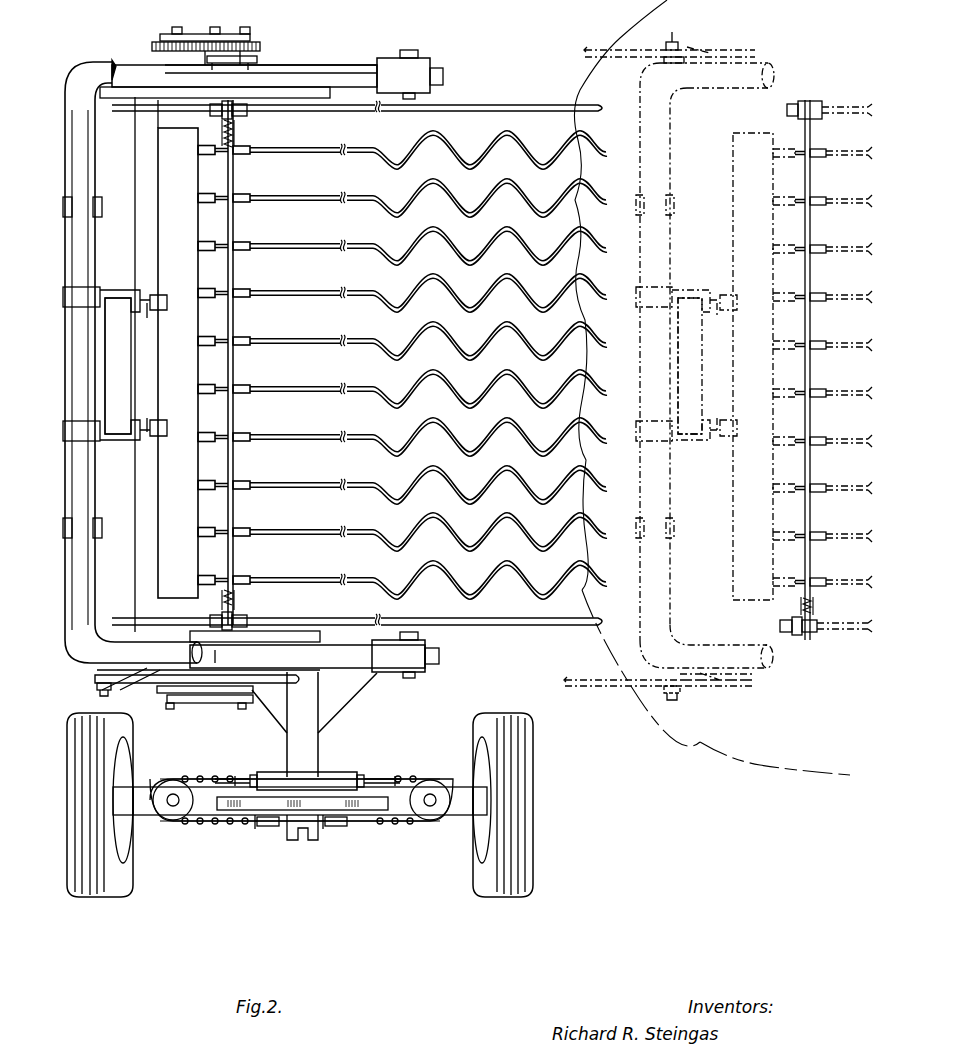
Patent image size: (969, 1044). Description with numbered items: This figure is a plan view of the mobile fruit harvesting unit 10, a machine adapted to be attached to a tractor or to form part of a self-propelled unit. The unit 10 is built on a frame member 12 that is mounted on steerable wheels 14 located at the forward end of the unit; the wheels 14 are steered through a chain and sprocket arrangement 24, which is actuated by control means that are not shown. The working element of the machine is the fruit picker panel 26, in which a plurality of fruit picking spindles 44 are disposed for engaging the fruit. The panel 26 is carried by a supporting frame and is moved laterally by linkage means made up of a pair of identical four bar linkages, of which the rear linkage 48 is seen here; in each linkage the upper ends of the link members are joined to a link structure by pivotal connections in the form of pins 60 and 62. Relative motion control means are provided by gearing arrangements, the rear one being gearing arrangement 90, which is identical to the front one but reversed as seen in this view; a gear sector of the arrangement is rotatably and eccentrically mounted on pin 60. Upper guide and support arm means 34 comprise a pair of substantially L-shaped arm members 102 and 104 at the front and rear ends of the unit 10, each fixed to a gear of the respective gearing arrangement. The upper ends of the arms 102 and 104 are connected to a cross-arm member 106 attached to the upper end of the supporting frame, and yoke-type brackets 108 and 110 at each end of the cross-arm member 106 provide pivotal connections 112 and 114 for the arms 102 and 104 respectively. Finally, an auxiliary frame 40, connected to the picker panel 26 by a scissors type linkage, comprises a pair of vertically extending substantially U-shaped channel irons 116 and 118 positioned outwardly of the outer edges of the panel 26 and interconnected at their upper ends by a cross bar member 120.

The mobile fruit harvesting unit 10 is at (80, 62).
The frame member 12 is at (319, 750).
The steerable wheels 14 is at (533, 835).
The chain and sprocket arrangement 24 is at (368, 826).
The fruit picker panel 26 is at (183, 128).
The upper guide and support arm means 34 is at (322, 74).
The auxiliary frame 40 is at (236, 140).
The fruit picking spindles 44 is at (307, 343).
The four bar linkage 48 is at (306, 57).
The pin 60 is at (172, 704).
The pin 62 is at (244, 704).
The gearing arrangement 90 is at (262, 44).
The L-shaped arm member 102 is at (390, 662).
The L-shaped arm member 104 is at (370, 72).
The cross-arm member 106 is at (84, 654).
The yoke-type bracket 108 is at (120, 678).
The yoke-type bracket 110 is at (710, 58).
The pivotal connection 112 is at (105, 683).
The pivotal connection 114 is at (672, 42).
The U-shaped channel iron 116 is at (212, 620).
The U-shaped channel iron 118 is at (222, 111).
The cross bar member 120 is at (812, 600).